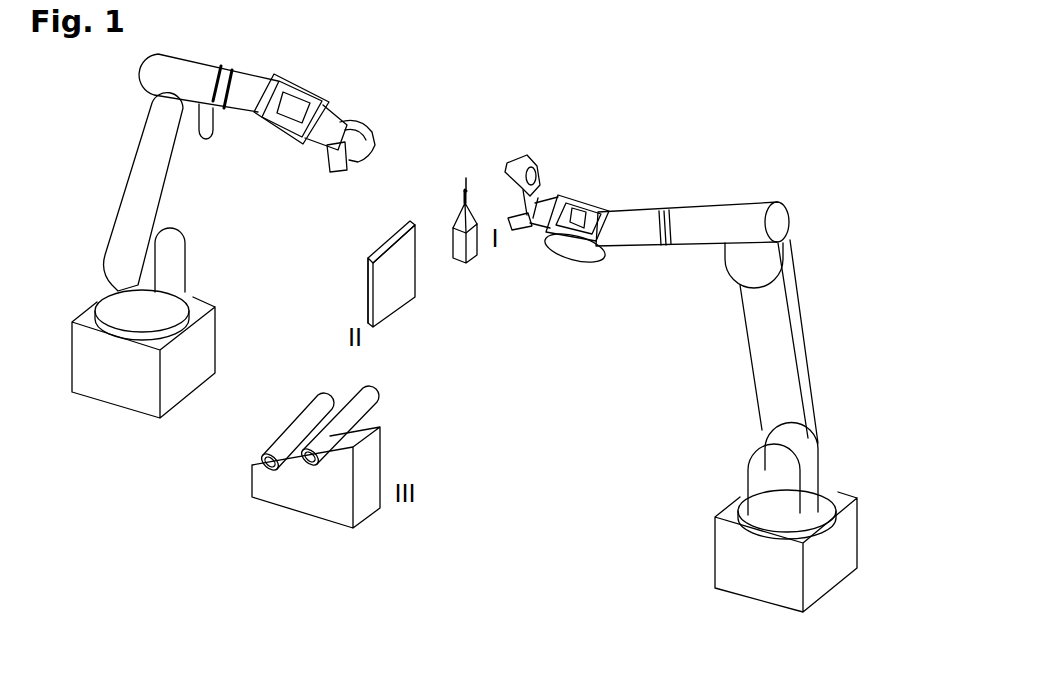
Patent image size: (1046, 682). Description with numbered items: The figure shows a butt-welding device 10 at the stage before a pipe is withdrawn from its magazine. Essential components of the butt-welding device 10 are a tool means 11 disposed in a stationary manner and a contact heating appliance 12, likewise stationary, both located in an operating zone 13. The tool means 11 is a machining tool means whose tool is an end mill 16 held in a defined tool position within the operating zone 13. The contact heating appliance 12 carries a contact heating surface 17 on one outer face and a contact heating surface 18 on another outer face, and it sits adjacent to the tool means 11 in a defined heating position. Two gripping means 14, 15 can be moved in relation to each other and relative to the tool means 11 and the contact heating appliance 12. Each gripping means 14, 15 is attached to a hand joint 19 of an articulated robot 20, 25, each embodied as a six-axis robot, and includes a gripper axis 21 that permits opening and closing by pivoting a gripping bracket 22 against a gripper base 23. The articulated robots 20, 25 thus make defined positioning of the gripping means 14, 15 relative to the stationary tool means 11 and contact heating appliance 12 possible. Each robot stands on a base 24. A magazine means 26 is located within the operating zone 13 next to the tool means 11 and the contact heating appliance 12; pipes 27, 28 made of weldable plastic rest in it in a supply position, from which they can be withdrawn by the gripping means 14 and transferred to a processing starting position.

The butt-welding device 10 is at (560, 140).
The tool means 11 is at (466, 174).
The contact heating appliance 12 is at (405, 335).
The operating zone 13 is at (533, 382).
The gripping means 14 is at (355, 115).
The gripping means 15 is at (540, 178).
The end mill 16 is at (463, 195).
The contact heating surface 17 is at (367, 292).
The contact heating surface 18 is at (395, 285).
The hand joint 19 is at (273, 135).
The articulated robot 20 is at (117, 180).
The gripper axis 21 is at (348, 152).
The gripping bracket 22 is at (520, 170).
The gripper base 23 is at (520, 222).
The robot base 24 is at (118, 310).
The articulated robot 25 is at (822, 347).
The magazine means 26 is at (300, 512).
The pipe 27 is at (367, 410).
The pipe 28 is at (297, 433).